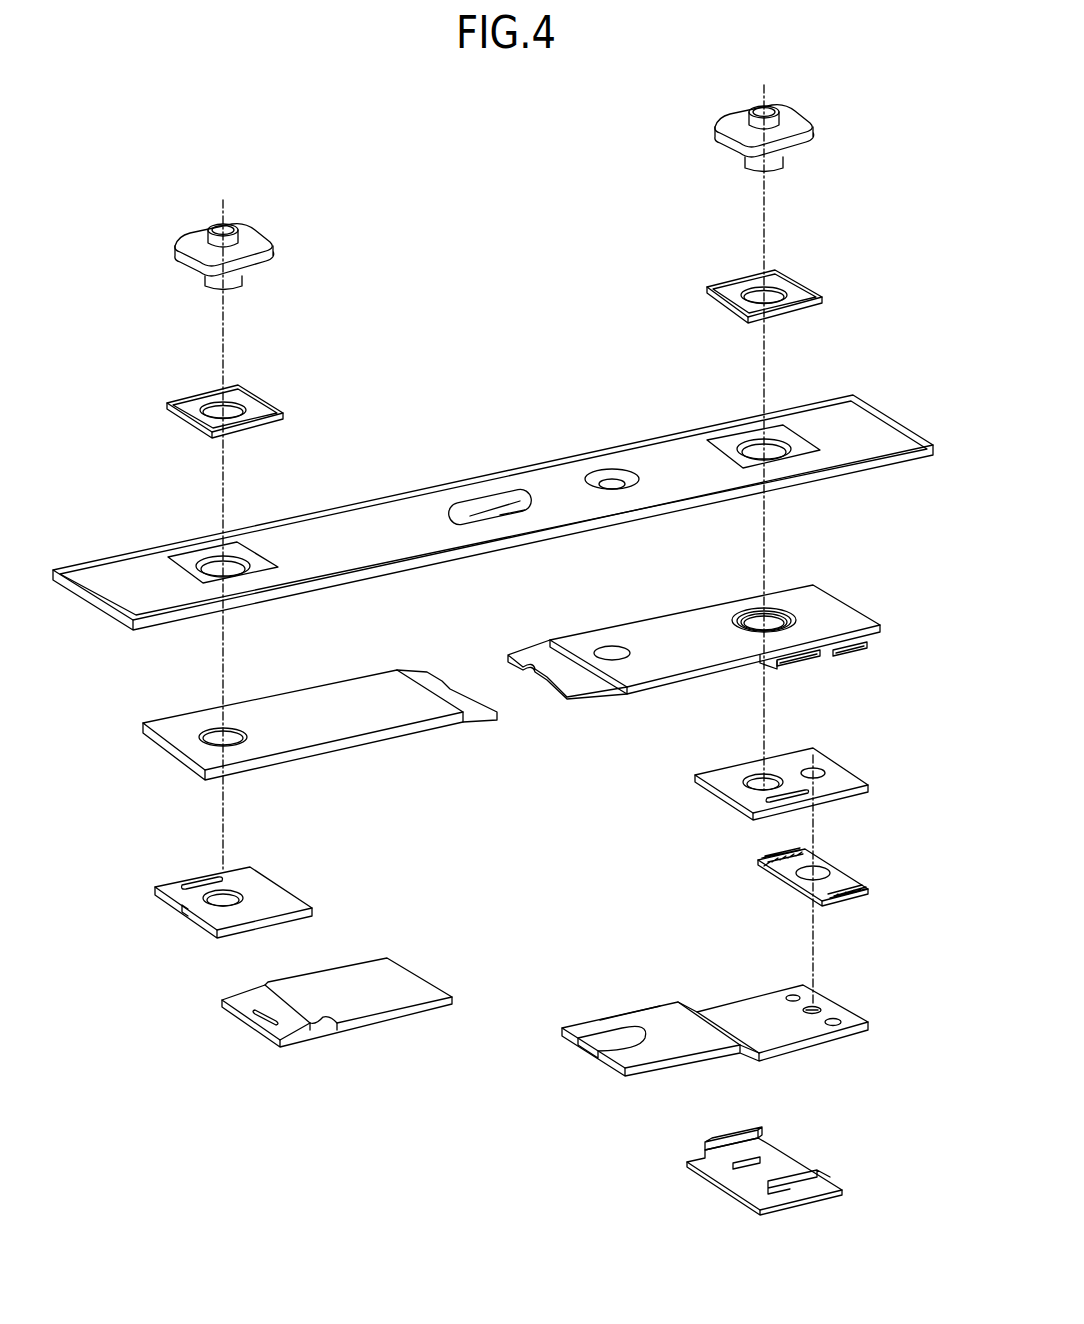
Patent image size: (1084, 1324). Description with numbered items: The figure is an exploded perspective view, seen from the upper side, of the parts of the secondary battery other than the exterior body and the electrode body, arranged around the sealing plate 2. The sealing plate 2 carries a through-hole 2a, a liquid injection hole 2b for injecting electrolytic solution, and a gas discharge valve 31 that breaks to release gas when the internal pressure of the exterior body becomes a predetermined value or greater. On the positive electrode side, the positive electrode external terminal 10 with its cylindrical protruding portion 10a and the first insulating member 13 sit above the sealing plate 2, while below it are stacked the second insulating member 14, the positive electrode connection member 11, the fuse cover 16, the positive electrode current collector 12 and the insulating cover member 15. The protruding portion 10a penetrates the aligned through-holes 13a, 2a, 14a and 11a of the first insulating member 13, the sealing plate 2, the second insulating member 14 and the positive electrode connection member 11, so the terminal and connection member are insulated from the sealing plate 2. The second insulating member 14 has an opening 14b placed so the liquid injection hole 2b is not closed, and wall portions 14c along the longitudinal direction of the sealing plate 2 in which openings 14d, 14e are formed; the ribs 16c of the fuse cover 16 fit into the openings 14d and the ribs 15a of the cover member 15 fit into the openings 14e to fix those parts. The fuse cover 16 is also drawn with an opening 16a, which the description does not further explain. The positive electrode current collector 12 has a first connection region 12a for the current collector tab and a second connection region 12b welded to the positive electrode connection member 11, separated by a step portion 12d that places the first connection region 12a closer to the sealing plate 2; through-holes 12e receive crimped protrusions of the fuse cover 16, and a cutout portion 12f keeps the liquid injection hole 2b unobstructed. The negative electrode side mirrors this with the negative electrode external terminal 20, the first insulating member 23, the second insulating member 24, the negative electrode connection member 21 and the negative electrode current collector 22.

The sealing plate 2 is at (495, 483).
The through-hole 2a is at (775, 445).
The liquid injection hole 2b is at (612, 478).
The gas discharge valve 31 is at (485, 508).
The positive electrode external terminal 10 is at (803, 120).
The cylindrical protruding portion 10a is at (790, 160).
The first insulating member 13 is at (802, 263).
The through-hole 13a is at (772, 290).
The second insulating member 14 is at (713, 620).
The through-hole 14a is at (770, 618).
The opening 14b is at (612, 650).
The wall portions 14c is at (760, 665).
The openings 14d is at (862, 650).
The openings 14e is at (805, 660).
The positive electrode connection member 11 is at (790, 776).
The through-hole 11a is at (757, 780).
The fuse cover 16 is at (799, 858).
The hole of spring plate 16a is at (820, 872).
The ribs 16c is at (775, 863).
The positive electrode current collector 12 is at (734, 999).
The first connection region 12a is at (658, 1020).
The second connection region 12b is at (752, 1012).
The step portion 12d is at (712, 1013).
The through-holes 12e is at (840, 1022).
The cutout portion 12f is at (588, 1038).
The insulating cover member 15 is at (785, 1166).
The ribs 15a is at (725, 1140).
The negative electrode external terminal 20 is at (200, 240).
The first insulating member 23 is at (195, 395).
The second insulating member 24 is at (172, 718).
The negative electrode connection member 21 is at (172, 882).
The negative electrode current collector 22 is at (422, 962).